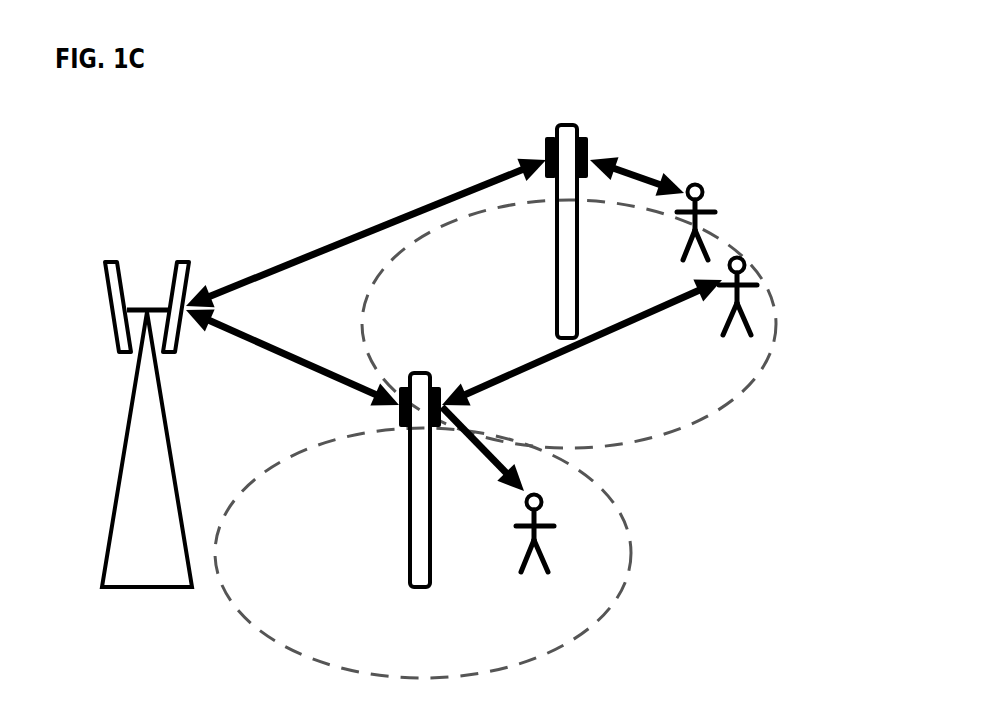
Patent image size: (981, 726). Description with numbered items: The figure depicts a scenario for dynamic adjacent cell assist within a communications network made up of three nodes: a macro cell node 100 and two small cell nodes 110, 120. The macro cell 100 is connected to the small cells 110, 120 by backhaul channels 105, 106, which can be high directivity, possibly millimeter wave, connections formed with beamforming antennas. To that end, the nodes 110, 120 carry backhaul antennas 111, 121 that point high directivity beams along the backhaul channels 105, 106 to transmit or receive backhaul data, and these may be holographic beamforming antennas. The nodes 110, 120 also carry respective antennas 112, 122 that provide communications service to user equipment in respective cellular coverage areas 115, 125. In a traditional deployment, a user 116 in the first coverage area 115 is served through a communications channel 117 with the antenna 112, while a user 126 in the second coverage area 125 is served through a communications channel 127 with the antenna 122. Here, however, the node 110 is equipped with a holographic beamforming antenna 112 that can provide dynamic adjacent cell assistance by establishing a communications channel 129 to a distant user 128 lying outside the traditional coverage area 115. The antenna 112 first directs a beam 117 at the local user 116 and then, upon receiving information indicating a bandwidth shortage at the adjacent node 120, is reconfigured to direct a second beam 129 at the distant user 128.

The macro cell node 100 is at (112, 440).
The backhaul channel 105 is at (273, 363).
The backhaul channel 106 is at (322, 242).
The small cell node 110 is at (408, 489).
The backhaul antenna 111 is at (403, 433).
The holographic beamforming antenna 112 is at (437, 383).
The first cellular coverage area 115 is at (588, 640).
The user 116 is at (533, 574).
The communications channel 117 is at (473, 458).
The small cell node 120 is at (573, 193).
The backhaul antenna 121 is at (552, 135).
The antenna 122 is at (588, 135).
The second cellular coverage area 125 is at (750, 397).
The user 126 is at (715, 202).
The communications channel 127 is at (645, 172).
The distant user 128 is at (750, 302).
The communications channel 129 is at (628, 338).